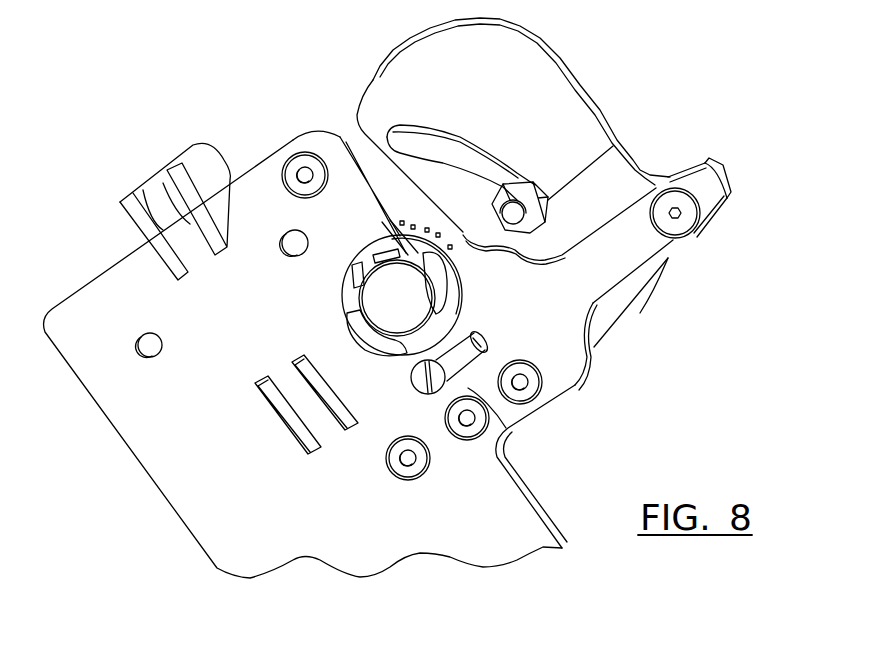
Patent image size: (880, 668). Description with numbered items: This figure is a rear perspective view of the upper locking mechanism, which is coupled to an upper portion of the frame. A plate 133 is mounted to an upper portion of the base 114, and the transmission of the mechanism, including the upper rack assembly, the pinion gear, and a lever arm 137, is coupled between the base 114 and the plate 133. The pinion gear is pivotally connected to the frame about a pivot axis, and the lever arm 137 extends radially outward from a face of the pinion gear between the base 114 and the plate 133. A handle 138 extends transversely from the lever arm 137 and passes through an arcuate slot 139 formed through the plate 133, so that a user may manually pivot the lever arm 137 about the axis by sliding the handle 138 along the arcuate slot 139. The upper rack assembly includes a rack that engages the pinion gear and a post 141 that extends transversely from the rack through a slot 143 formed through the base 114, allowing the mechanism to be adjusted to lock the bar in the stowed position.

The base 114 is at (133, 409).
The plate 133 is at (540, 85).
The lever arm 137 is at (359, 121).
The handle 138 is at (515, 212).
The arcuate slot 139 is at (403, 123).
The post 141 is at (436, 380).
The slot 143 is at (490, 342).